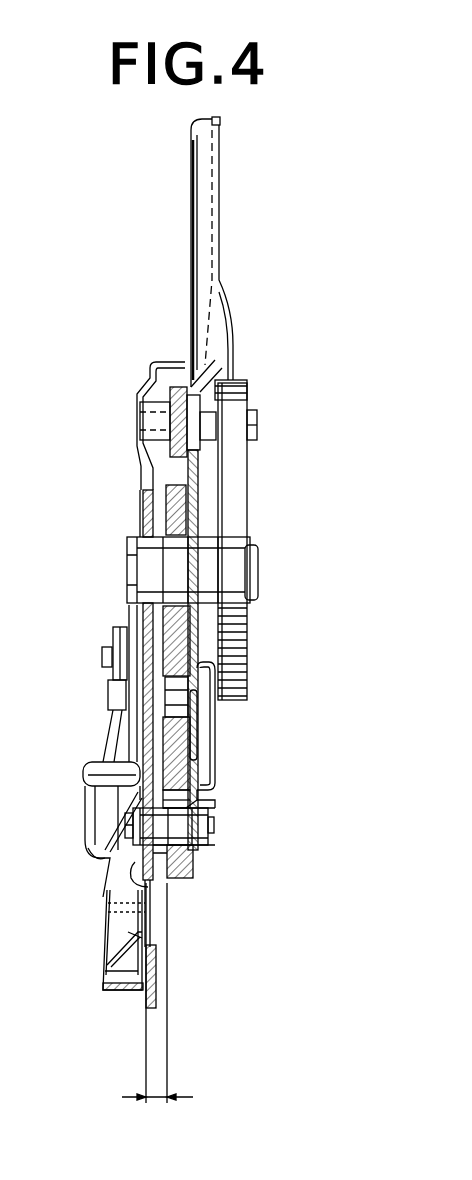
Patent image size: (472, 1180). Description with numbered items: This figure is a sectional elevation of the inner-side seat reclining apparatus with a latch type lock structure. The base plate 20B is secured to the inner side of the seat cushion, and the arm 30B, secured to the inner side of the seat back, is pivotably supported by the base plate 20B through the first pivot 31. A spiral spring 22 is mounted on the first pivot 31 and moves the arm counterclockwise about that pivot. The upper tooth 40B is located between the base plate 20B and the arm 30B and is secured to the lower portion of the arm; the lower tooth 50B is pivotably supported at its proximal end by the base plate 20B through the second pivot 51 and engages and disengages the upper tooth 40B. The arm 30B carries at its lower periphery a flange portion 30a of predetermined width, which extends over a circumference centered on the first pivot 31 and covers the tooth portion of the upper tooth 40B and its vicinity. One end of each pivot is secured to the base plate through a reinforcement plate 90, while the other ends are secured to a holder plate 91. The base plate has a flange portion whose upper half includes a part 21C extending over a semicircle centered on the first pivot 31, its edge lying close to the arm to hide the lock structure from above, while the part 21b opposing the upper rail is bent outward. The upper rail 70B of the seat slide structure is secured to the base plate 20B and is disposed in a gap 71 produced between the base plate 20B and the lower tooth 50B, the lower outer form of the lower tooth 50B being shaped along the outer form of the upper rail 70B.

The arm 30B is at (226, 242).
The part of flange portion 21C is at (165, 362).
The spiral spring 22 is at (248, 466).
The base plate 20B is at (142, 514).
The first pivot 31 is at (258, 563).
The upper tooth 40B is at (223, 645).
The reinforcement plate 90 is at (103, 658).
The flange portion 30a is at (215, 747).
The holder plate 91 is at (215, 763).
The lower tooth 50B is at (198, 800).
The second pivot 51 is at (210, 827).
The upper rail 70B is at (160, 985).
The part of flange portion 21b is at (118, 992).
The gap 71 is at (157, 1100).